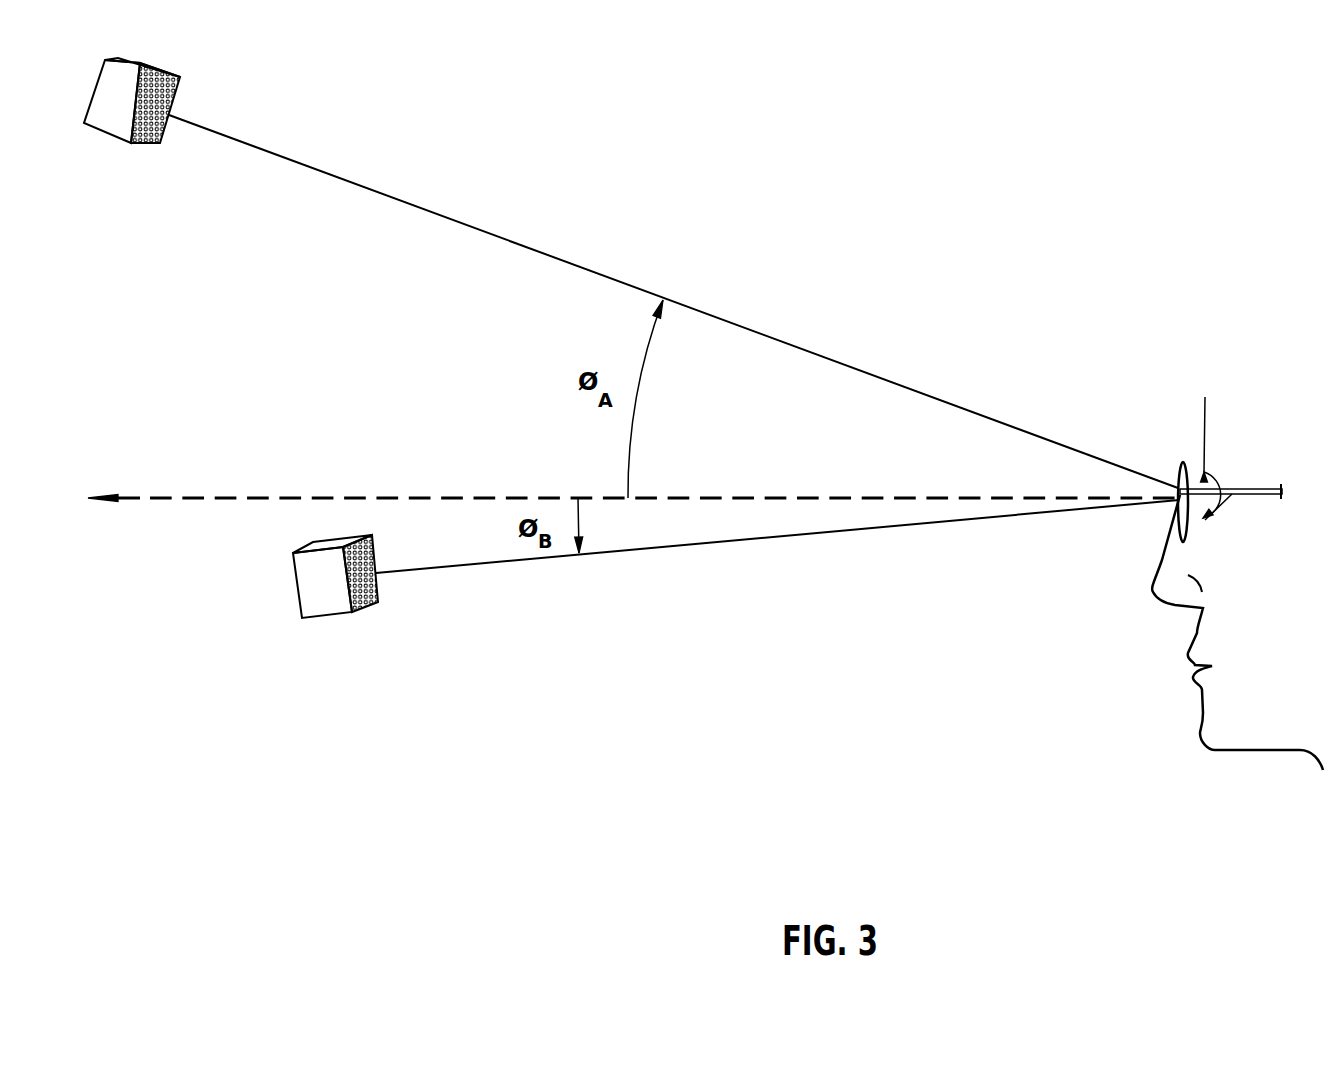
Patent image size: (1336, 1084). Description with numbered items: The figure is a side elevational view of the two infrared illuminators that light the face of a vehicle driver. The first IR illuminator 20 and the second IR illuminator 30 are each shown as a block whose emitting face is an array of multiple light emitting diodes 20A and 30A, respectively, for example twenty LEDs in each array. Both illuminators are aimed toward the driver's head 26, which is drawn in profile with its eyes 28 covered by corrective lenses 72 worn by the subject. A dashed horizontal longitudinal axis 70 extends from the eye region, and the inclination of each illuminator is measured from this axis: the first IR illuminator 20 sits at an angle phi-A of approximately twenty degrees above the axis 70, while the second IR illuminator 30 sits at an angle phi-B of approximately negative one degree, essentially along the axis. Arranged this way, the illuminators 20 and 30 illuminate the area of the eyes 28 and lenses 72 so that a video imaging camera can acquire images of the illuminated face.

The first IR illuminator 20 is at (158, 132).
The light emitting diodes 20A is at (170, 108).
The second IR illuminator 30 is at (374, 611).
The light emitting diodes 30A is at (378, 583).
The horizontal longitudinal axis 70 is at (321, 493).
The corrective lenses 72 is at (1178, 487).
The eyes 28 is at (1215, 507).
The head 26 is at (1112, 660).